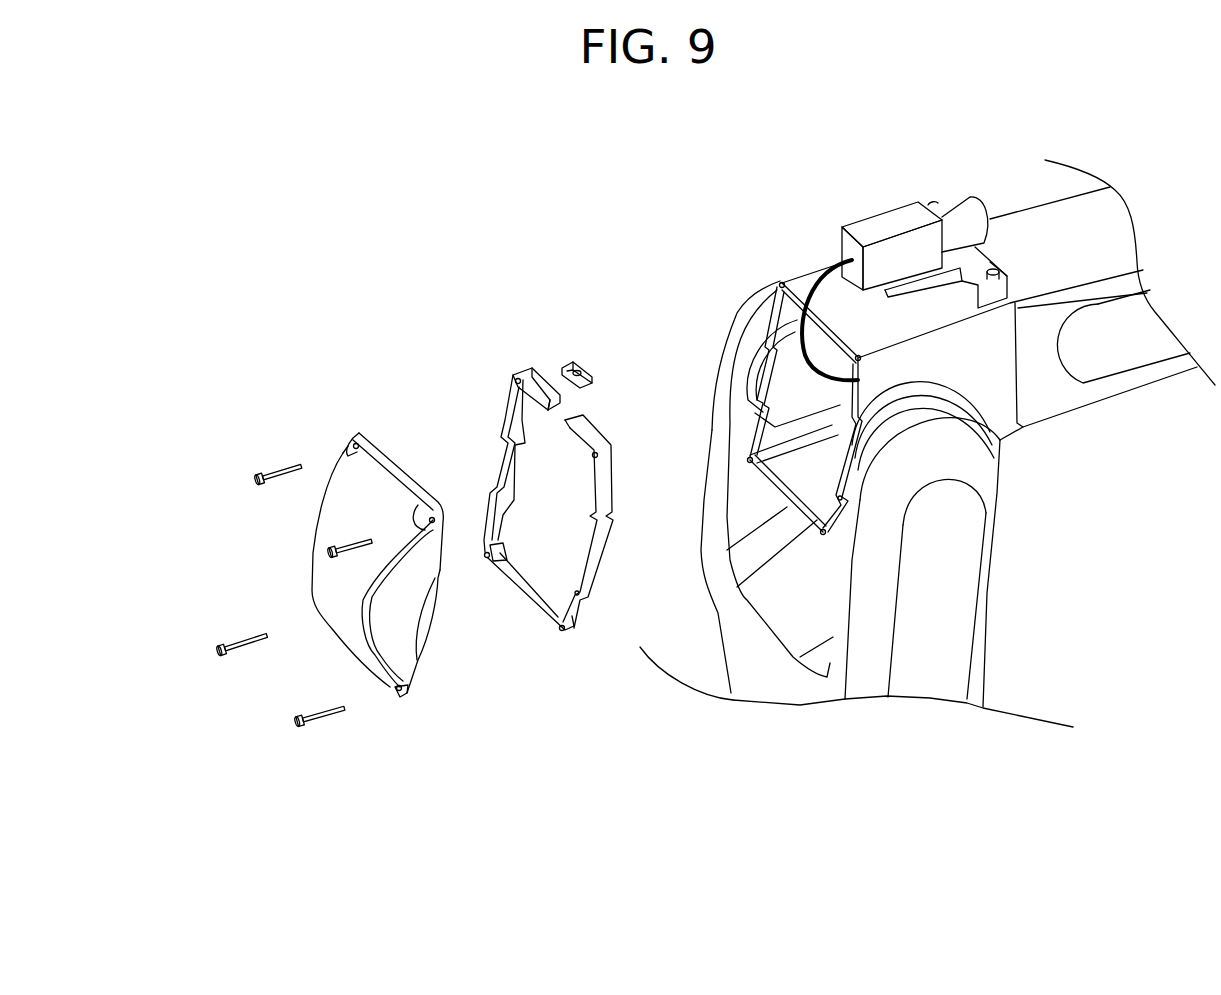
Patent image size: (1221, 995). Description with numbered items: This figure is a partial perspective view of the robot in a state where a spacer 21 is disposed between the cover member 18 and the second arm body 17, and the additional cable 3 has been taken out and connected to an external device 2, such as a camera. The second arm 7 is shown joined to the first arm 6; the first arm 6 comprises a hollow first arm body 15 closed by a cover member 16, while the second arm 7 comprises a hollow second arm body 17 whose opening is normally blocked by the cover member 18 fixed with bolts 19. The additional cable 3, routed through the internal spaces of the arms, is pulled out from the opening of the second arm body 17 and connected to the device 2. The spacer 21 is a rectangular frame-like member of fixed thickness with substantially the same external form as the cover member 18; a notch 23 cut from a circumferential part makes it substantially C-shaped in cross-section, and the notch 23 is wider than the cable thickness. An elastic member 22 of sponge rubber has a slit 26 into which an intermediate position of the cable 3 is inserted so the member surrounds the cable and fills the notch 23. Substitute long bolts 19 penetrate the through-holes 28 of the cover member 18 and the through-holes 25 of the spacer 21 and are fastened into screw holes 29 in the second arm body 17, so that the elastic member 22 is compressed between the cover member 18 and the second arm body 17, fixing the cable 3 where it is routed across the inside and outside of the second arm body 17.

The device 2 is at (878, 226).
The additional cable 3 is at (808, 280).
The first arm 6 is at (716, 389).
The second arm 7 is at (1018, 239).
The first arm body 15 is at (730, 610).
The cover member 16 is at (950, 570).
The second arm body 17 is at (1040, 213).
The cover member 18 is at (372, 507).
The bolts 19 is at (256, 478).
The spacer 21 is at (502, 428).
The elastic member 22 is at (570, 356).
The notch 23 is at (557, 410).
The through-holes 25 is at (515, 381).
The slit 26 is at (570, 372).
The through-holes 28 is at (352, 446).
The screw holes 29 is at (778, 284).